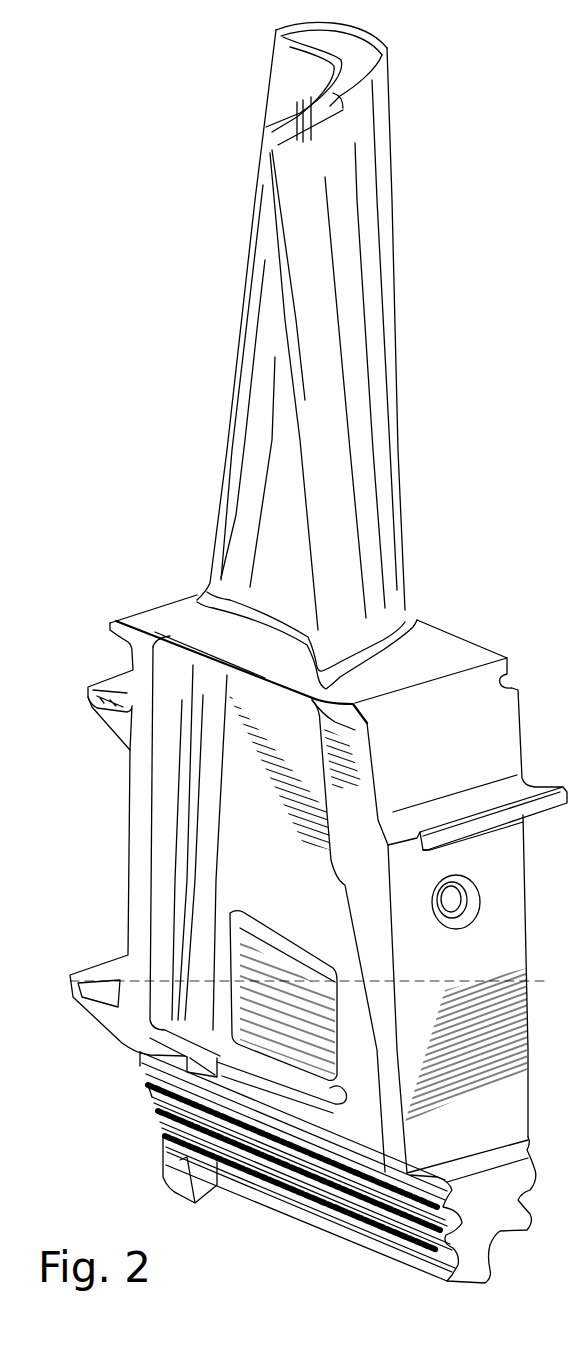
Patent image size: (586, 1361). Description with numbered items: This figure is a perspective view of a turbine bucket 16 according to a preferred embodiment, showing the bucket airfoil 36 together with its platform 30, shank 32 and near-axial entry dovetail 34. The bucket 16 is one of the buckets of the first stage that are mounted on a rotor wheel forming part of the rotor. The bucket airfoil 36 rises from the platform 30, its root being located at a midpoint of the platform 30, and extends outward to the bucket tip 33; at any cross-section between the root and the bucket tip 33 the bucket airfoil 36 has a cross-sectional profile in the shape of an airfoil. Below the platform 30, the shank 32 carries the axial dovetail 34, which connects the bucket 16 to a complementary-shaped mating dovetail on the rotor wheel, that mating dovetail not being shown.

The bucket 16 is at (220, 492).
The platform 30 is at (187, 617).
The shank 32 is at (240, 858).
The bucket tip 33 is at (368, 23).
The axial dovetail 34 is at (160, 1103).
The bucket airfoil 36 is at (272, 442).